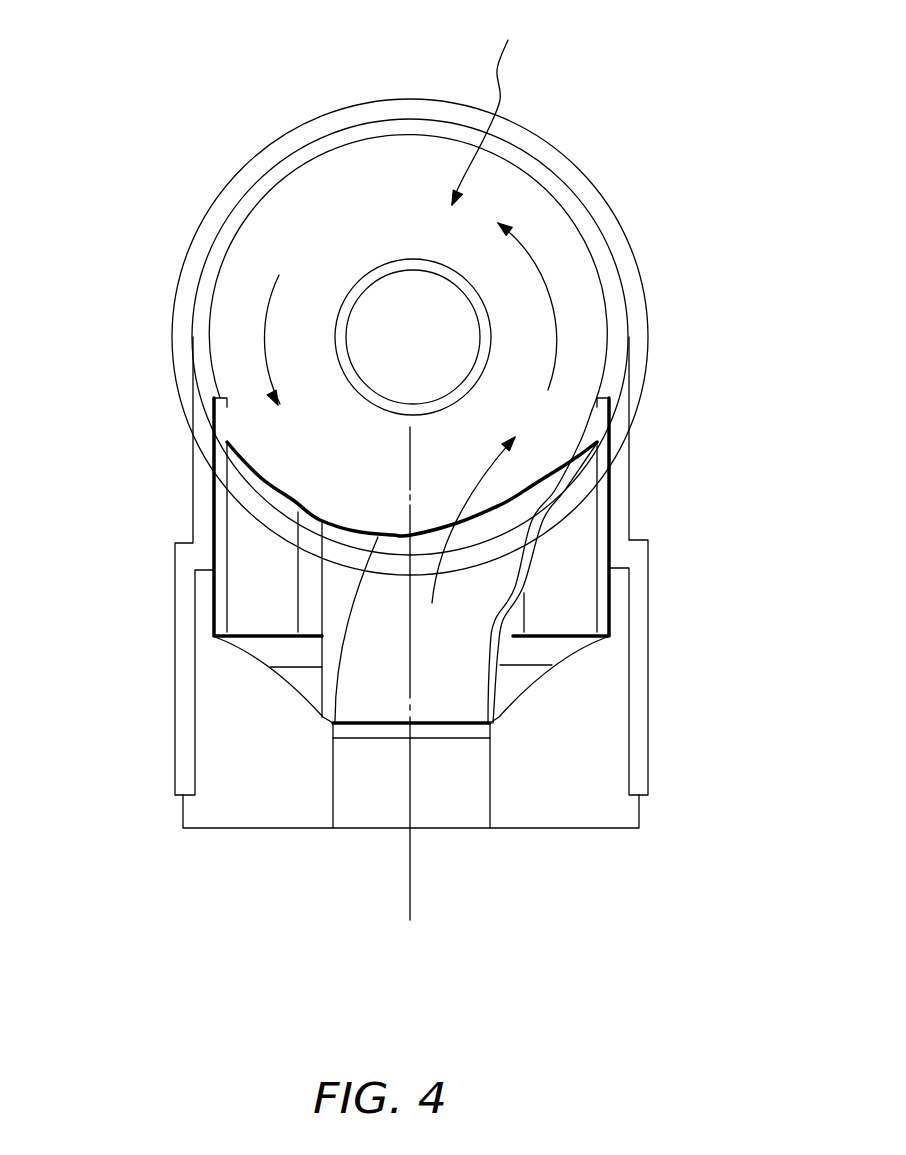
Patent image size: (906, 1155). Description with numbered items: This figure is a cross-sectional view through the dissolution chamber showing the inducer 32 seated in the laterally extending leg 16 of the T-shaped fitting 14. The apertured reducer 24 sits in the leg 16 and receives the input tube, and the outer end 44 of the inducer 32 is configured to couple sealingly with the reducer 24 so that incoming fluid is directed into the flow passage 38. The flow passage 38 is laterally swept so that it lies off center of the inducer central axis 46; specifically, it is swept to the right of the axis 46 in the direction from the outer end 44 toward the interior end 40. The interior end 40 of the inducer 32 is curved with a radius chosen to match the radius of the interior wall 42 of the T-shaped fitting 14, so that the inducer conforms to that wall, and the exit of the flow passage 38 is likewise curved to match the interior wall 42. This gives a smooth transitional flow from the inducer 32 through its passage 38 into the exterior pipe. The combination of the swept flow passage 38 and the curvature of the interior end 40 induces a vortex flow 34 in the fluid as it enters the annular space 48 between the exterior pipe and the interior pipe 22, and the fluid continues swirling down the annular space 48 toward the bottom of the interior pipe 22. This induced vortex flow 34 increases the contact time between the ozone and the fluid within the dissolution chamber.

The T-shaped fitting 14 is at (593, 235).
The laterally extending leg 16 is at (630, 497).
The interior pipe 22 is at (405, 258).
The apertured reducer 24 is at (245, 783).
The inducer 32 is at (220, 482).
The vortex flow 34 is at (532, 258).
The flow passage 38 is at (478, 597).
The interior end 40 is at (293, 495).
The interior wall 42 is at (258, 213).
The outer end 44 is at (372, 730).
The central axis 46 is at (413, 877).
The annular space 48 is at (490, 102).